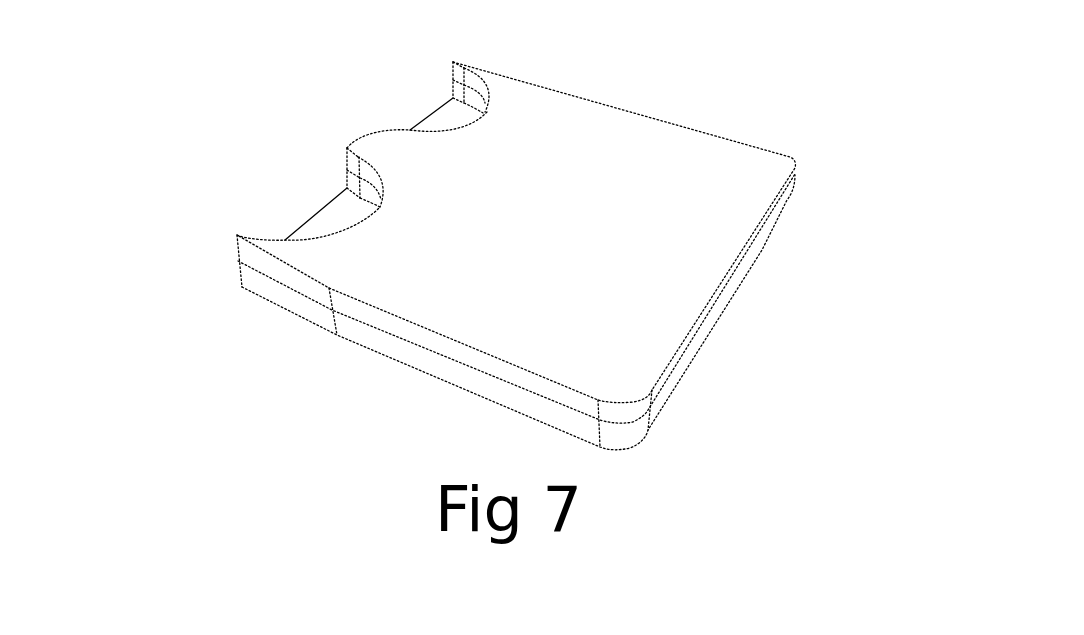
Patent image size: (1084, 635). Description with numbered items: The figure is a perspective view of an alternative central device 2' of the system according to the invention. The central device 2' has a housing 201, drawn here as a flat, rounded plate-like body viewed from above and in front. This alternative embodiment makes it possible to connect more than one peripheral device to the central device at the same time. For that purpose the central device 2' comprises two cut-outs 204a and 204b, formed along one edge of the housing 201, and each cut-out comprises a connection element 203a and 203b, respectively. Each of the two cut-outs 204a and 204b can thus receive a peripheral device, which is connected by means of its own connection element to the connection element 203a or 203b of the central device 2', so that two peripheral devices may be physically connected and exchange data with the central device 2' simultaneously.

The alternative central device 2' is at (501, 232).
The housing 201 is at (658, 112).
The connection element 203a is at (377, 102).
The connection element 203b is at (300, 201).
The cut-out 204a is at (555, 124).
The cut-out 204b is at (367, 220).